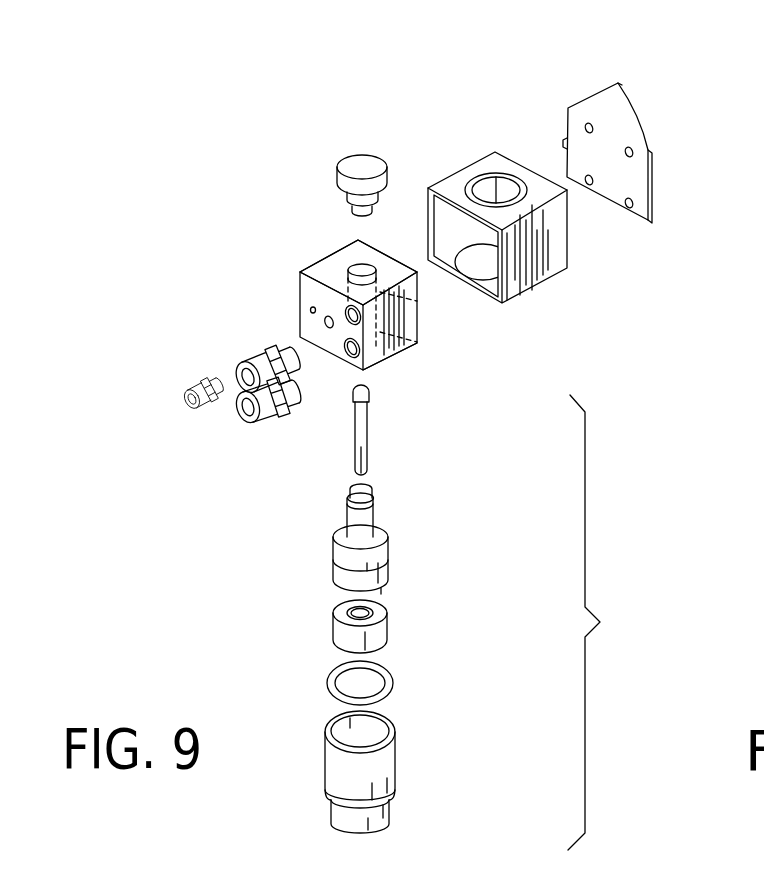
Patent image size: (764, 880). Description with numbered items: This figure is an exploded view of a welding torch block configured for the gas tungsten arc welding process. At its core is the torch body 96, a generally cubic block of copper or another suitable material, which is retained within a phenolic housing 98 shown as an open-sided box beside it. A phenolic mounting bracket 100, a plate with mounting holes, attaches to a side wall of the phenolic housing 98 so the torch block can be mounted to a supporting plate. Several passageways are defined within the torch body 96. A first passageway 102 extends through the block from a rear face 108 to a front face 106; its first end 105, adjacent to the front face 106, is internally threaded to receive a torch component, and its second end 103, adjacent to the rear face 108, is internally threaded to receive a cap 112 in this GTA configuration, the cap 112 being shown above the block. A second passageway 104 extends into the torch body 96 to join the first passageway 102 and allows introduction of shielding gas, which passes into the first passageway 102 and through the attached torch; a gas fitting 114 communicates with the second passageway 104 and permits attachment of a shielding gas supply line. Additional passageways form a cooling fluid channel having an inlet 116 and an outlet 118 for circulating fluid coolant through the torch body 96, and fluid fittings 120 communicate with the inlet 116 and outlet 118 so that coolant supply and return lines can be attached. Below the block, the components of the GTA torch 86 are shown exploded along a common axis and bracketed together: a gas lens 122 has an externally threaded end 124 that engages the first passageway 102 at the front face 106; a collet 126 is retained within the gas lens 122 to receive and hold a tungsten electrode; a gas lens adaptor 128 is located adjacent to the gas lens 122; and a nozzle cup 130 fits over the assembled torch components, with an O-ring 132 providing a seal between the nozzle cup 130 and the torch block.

The GTA torch 86 is at (601, 622).
The torch body 96 is at (301, 272).
The phenolic housing 98 is at (563, 268).
The phenolic mounting bracket 100 is at (632, 115).
The first passageway 102 is at (361, 268).
The second end 103 is at (417, 301).
The second passageway 104 is at (325, 321).
The first end 105 is at (418, 343).
The front face 106 is at (388, 360).
The rear face 108 is at (387, 257).
The cap 112 is at (361, 163).
The gas fitting 114 is at (197, 407).
The inlet 116 is at (359, 316).
The outlet 118 is at (346, 341).
The fluid fittings 120 is at (267, 412).
The gas lens 122 is at (389, 550).
The externally threaded end 124 is at (374, 488).
The collet 126 is at (368, 437).
The gas lens adaptor 128 is at (388, 620).
The nozzle cup 130 is at (395, 755).
The O-ring 132 is at (393, 685).